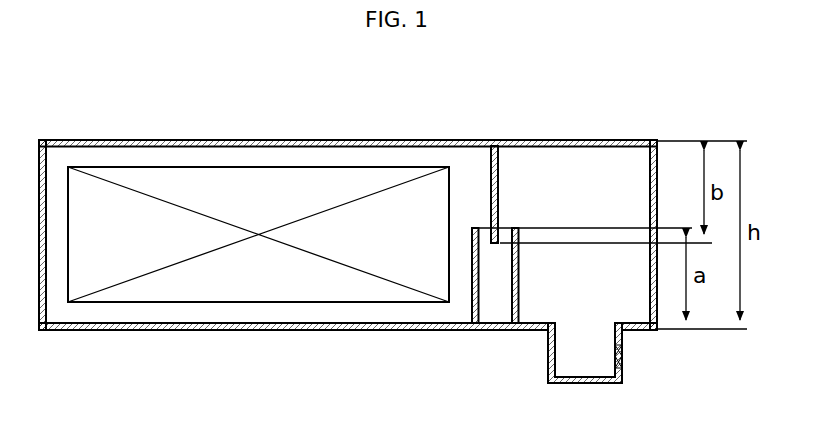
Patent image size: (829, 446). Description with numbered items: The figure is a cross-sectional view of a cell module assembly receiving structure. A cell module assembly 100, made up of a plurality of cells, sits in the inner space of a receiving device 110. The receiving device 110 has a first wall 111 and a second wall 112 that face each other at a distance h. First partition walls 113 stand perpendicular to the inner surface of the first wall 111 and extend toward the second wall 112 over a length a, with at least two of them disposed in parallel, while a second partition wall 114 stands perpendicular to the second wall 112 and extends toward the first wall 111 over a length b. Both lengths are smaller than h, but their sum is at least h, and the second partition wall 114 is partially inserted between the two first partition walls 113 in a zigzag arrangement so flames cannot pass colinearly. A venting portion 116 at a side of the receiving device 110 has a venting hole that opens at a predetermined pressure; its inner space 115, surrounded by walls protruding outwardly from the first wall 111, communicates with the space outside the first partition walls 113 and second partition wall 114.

The cell module assembly 100 is at (293, 167).
The receiving device 110 is at (500, 119).
The first wall 111 is at (408, 331).
The second wall 112 is at (408, 140).
The first partition wall 113 is at (518, 297).
The second partition wall 114 is at (498, 172).
The inner space 115 is at (580, 354).
The venting portion 116 is at (626, 357).